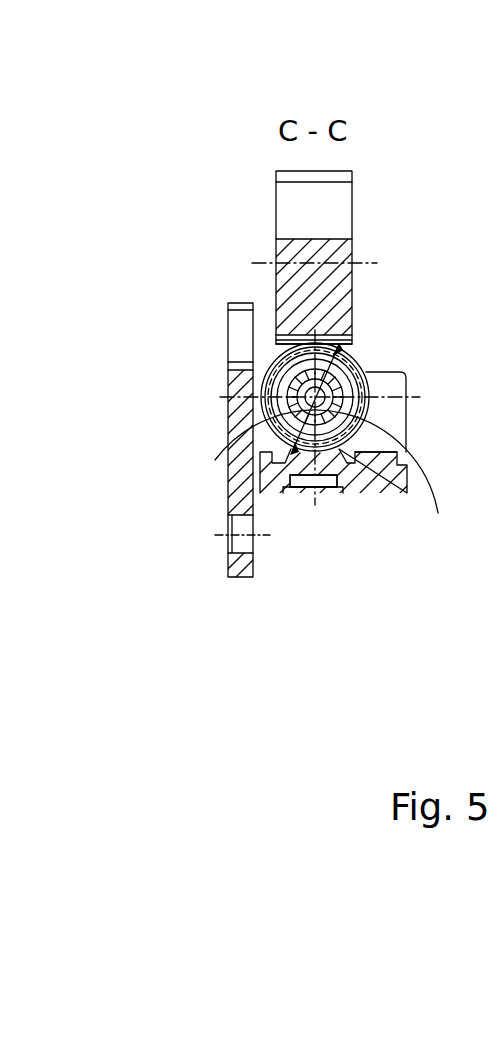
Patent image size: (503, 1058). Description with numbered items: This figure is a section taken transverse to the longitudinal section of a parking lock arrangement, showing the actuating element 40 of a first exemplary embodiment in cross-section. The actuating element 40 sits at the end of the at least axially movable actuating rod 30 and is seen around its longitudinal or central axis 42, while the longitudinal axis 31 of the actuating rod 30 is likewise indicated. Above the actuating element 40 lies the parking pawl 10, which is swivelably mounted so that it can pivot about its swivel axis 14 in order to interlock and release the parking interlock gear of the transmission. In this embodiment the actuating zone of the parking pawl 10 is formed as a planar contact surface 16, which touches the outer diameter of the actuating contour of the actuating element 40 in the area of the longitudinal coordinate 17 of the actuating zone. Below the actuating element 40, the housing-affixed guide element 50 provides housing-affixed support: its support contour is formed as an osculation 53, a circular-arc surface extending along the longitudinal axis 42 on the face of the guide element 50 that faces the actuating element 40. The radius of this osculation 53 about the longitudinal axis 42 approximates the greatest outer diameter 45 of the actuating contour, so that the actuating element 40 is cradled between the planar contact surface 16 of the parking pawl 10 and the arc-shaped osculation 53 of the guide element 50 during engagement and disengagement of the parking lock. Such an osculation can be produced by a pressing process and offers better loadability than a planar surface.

The parking pawl 10 is at (303, 215).
The swivel axis 14 is at (260, 260).
The planar contact surface 16 is at (302, 350).
The longitudinal coordinate 17 is at (319, 334).
The actuating rod 30 is at (298, 397).
The longitudinal axis 31 is at (432, 500).
The actuating element 40 is at (342, 345).
The longitudinal axis 42 is at (432, 500).
The greatest outer diameter 45 is at (295, 400).
The guide element 50 is at (348, 473).
The osculation 53 is at (350, 427).